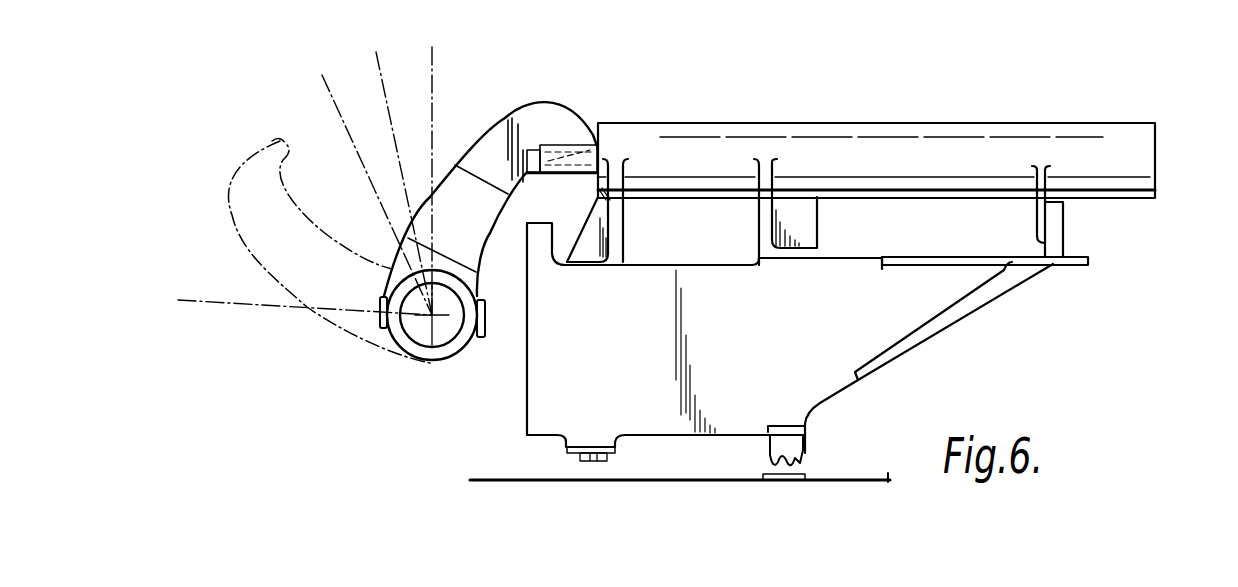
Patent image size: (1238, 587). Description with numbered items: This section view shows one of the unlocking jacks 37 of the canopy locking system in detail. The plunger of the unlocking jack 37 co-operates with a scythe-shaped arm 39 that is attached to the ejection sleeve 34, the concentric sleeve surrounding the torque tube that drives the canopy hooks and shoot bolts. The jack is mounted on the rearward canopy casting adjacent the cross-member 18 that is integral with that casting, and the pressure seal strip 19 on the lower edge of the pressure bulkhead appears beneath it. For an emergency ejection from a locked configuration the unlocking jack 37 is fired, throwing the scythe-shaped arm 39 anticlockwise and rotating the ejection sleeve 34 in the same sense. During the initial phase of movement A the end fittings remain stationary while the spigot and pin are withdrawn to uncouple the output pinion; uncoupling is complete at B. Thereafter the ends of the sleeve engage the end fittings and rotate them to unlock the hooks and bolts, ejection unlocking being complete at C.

The cross-member 18 is at (888, 376).
The pressure seal strip 19 is at (805, 457).
The ejection sleeve 34 is at (433, 355).
The unlocking jack 37 is at (1145, 160).
The scythe-shaped arm 39 is at (493, 118).
The initial phase of movement A is at (432, 55).
The uncoupling complete position B is at (313, 88).
The ejection unlocking complete position C is at (176, 313).